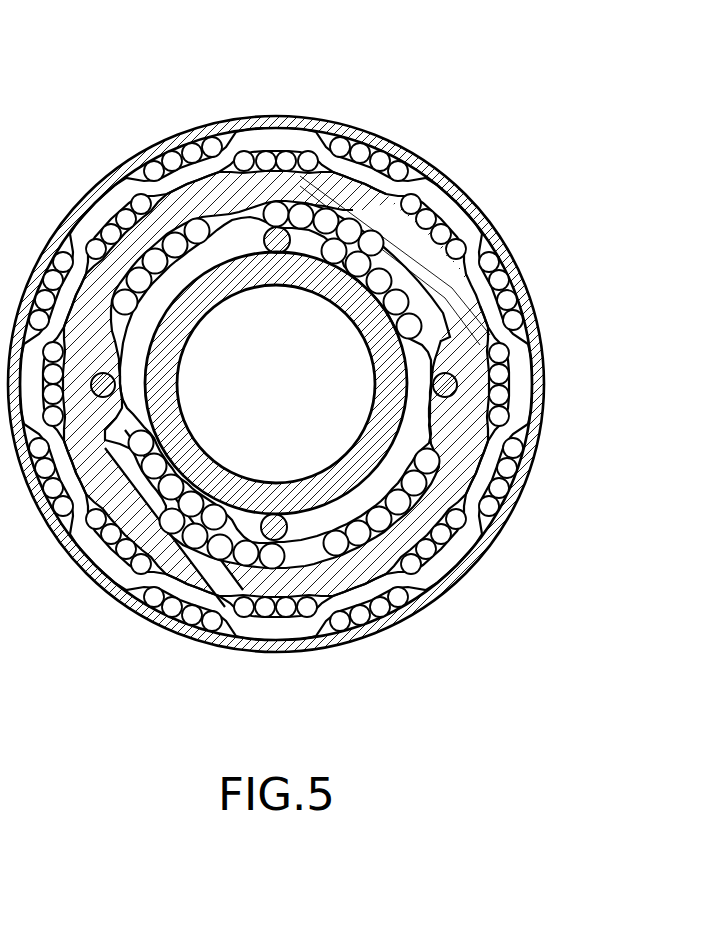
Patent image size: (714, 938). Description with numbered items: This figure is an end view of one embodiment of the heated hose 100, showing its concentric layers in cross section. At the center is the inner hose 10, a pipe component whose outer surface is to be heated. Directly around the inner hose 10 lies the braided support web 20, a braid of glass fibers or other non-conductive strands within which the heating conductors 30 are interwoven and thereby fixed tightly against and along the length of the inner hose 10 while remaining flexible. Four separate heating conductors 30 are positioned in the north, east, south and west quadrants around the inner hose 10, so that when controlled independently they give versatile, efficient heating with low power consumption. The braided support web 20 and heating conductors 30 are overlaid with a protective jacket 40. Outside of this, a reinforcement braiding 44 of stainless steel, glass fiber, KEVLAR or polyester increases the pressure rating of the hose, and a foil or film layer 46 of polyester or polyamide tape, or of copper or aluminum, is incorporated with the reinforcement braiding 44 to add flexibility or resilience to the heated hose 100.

The heated hose 100 is at (316, 362).
The inner hose 10 is at (320, 497).
The braided support web 20 is at (430, 466).
The heating conductor 30 is at (447, 385).
The protective jacket 40 is at (458, 298).
The reinforcement braiding 44 is at (427, 583).
The foil or film layer 46 is at (456, 193).